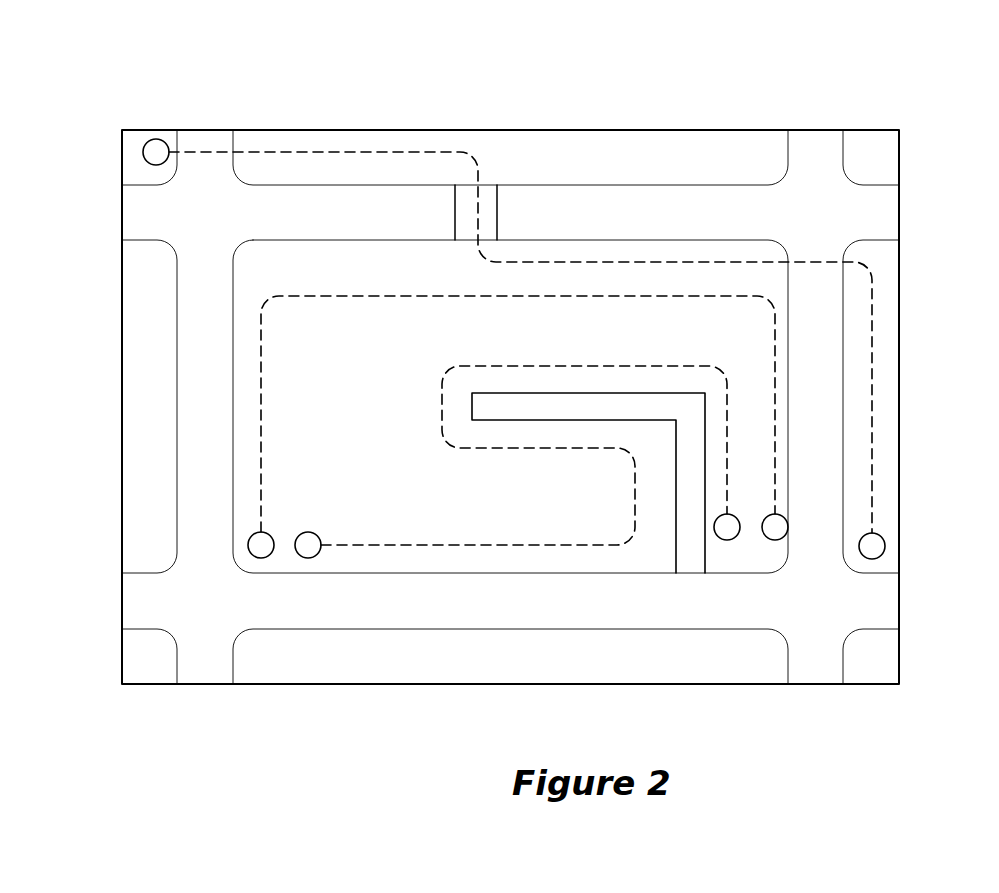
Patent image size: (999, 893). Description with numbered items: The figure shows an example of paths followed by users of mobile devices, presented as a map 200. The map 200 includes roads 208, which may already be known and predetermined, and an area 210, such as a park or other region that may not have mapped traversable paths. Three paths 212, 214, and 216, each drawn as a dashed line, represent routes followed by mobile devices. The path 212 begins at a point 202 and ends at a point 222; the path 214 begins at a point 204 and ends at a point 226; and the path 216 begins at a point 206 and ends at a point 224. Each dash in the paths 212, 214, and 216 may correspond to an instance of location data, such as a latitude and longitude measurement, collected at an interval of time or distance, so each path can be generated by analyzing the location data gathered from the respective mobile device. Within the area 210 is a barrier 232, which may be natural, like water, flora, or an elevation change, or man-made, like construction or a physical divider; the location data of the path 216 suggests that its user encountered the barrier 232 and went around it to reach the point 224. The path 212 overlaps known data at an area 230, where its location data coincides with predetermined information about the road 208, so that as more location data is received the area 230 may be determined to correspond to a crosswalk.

The map 200 is at (936, 77).
The point 202 is at (157, 139).
The point 204 is at (256, 558).
The point 206 is at (310, 558).
The roads 208 is at (808, 140).
The area 210 is at (890, 308).
The path 212 is at (302, 152).
The path 214 is at (261, 474).
The path 216 is at (526, 448).
The point 222 is at (885, 546).
The point 224 is at (727, 540).
The point 226 is at (777, 540).
The area 230 is at (497, 215).
The barrier 232 is at (676, 548).